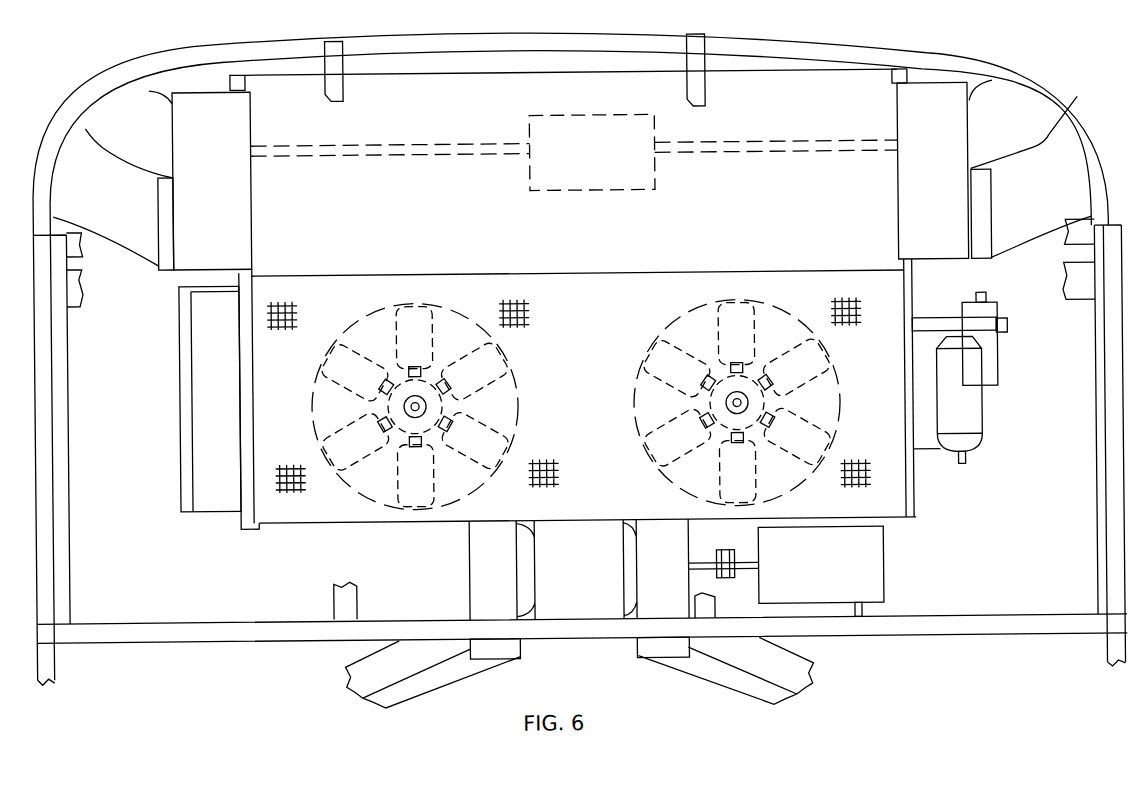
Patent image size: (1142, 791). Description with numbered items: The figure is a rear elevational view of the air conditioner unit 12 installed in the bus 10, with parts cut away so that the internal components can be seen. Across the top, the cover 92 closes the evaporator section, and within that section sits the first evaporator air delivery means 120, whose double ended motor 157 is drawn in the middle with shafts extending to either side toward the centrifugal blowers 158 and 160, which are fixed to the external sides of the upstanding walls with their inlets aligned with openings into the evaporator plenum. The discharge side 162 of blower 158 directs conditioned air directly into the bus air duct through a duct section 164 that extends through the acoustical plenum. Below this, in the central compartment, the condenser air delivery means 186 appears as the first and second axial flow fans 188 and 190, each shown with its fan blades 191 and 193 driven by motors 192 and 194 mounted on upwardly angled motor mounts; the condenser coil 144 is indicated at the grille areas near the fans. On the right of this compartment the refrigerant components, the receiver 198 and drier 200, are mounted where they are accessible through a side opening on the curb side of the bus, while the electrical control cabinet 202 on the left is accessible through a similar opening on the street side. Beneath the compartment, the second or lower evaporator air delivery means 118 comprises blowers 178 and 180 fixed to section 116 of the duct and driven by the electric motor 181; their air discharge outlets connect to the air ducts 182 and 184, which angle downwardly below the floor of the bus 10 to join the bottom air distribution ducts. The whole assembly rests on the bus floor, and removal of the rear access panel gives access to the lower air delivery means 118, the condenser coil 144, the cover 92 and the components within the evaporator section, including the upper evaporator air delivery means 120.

The air conditioner unit 12 is at (606, 24).
The cover 92 is at (768, 74).
The double ended motor 157 is at (580, 113).
The first evaporator air delivery means 120 is at (603, 221).
The centrifugal blower 158 is at (972, 138).
The centrifugal blower 160 is at (175, 141).
The duct section 164 is at (1042, 158).
The discharge side 162 is at (993, 218).
The axial flow fan 190 is at (415, 399).
The fan blades 193 is at (440, 328).
The motor 194 is at (355, 399).
The condenser air delivery means 186 is at (576, 397).
The axial flow fan 188 is at (727, 396).
The fan blades 191 is at (663, 356).
The motor 192 is at (793, 408).
The drier 200 is at (998, 389).
The receiver 198 is at (976, 434).
The electrical control cabinet 202 is at (182, 471).
The condenser coil 144 is at (283, 494).
The blower 180 is at (468, 575).
The section of duct 116 is at (548, 613).
The second or lower evaporator air delivery means 118 is at (581, 667).
The blower 178 is at (688, 543).
The electric motor 181 is at (883, 566).
The bus 10 is at (193, 639).
The air duct 184 is at (372, 700).
The air duct 182 is at (790, 706).